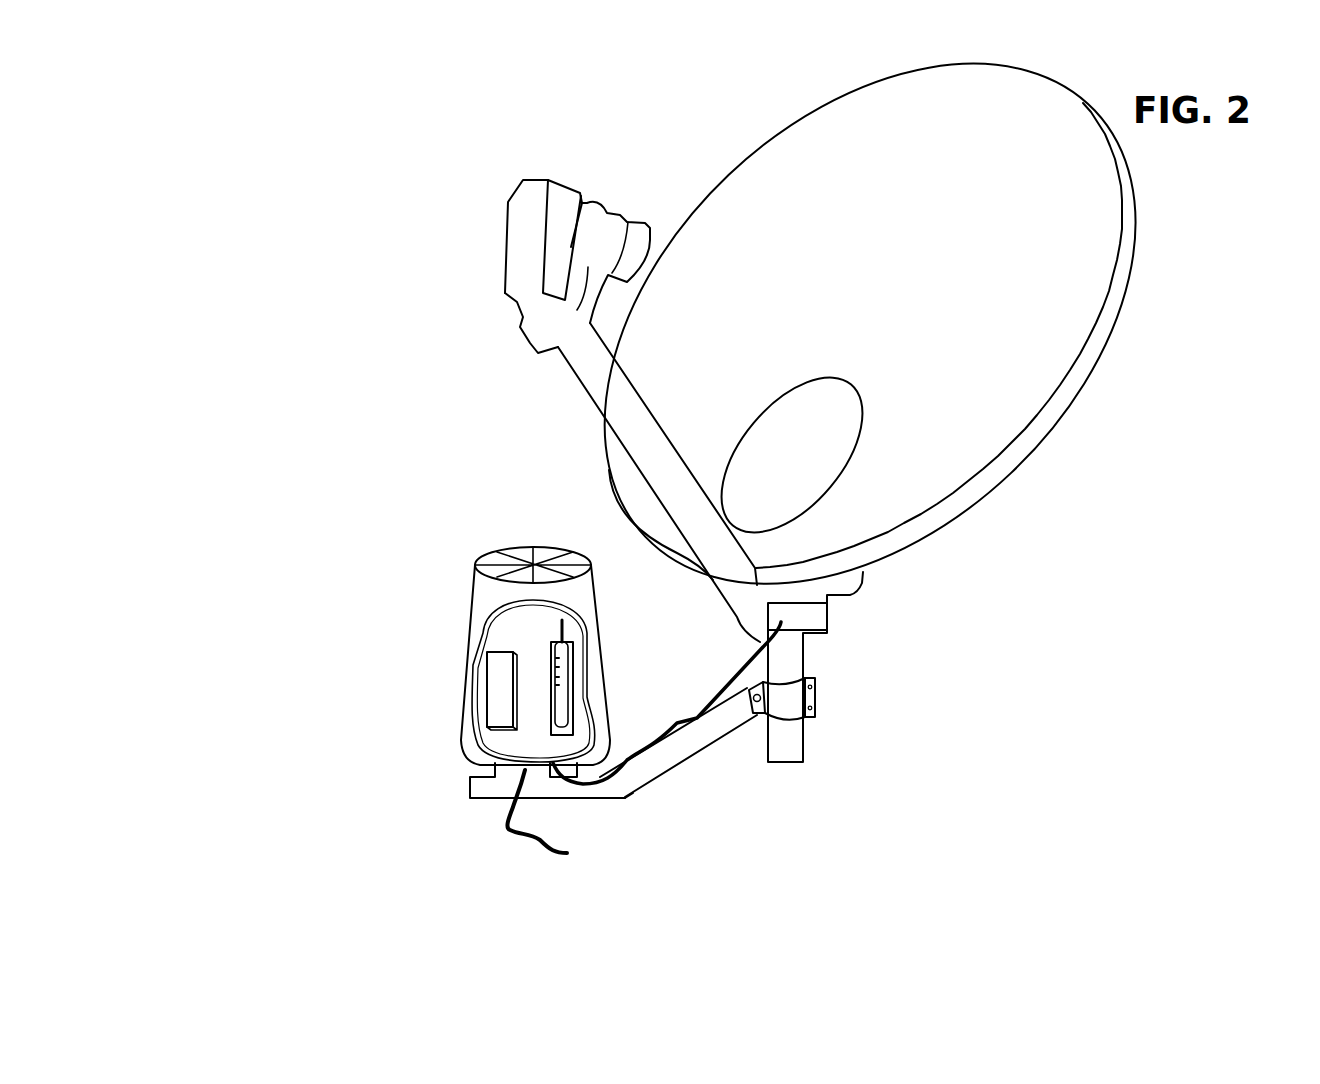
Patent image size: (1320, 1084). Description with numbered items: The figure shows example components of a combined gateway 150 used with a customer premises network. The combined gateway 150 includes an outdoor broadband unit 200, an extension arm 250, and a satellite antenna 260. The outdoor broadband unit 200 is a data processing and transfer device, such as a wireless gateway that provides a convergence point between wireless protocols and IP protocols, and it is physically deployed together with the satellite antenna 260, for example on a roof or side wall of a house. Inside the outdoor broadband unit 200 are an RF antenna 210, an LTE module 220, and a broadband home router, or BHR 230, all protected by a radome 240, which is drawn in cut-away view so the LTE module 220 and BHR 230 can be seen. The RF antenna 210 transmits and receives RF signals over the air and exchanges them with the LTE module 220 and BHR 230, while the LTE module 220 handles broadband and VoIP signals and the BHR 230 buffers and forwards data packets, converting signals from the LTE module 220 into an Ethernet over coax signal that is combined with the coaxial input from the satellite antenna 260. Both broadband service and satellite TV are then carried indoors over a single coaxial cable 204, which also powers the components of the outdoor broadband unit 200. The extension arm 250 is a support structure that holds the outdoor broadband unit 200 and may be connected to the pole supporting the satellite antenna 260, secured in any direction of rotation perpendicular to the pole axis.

The combined gateway 150 is at (215, 103).
The outdoor broadband unit 200 is at (440, 496).
The coaxial cable 204 is at (510, 832).
The RF antenna 210 is at (560, 548).
The LTE module 220 is at (487, 690).
The broadband home router (BHR) 230 is at (577, 658).
The radome 240 is at (478, 590).
The extension arm 250 is at (688, 758).
The satellite antenna 260 is at (970, 548).